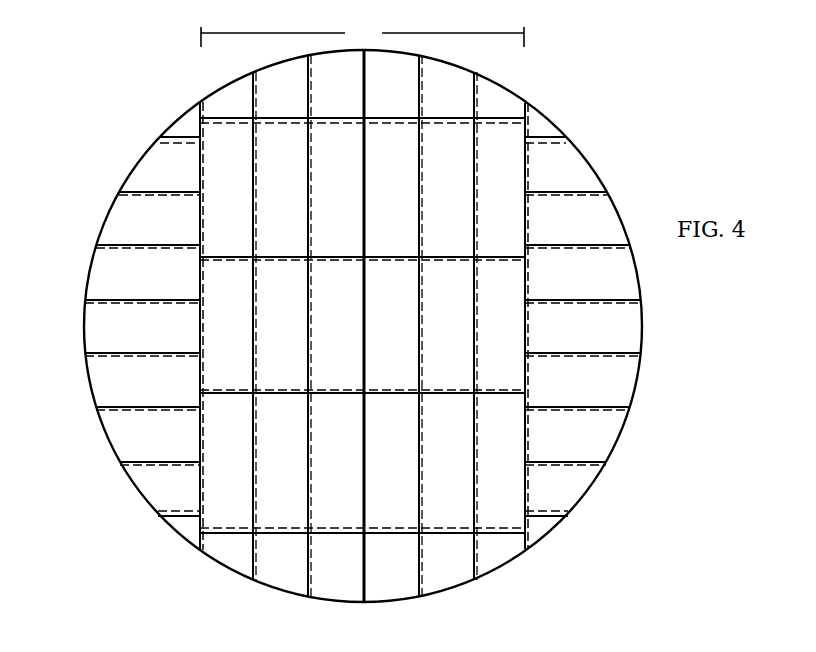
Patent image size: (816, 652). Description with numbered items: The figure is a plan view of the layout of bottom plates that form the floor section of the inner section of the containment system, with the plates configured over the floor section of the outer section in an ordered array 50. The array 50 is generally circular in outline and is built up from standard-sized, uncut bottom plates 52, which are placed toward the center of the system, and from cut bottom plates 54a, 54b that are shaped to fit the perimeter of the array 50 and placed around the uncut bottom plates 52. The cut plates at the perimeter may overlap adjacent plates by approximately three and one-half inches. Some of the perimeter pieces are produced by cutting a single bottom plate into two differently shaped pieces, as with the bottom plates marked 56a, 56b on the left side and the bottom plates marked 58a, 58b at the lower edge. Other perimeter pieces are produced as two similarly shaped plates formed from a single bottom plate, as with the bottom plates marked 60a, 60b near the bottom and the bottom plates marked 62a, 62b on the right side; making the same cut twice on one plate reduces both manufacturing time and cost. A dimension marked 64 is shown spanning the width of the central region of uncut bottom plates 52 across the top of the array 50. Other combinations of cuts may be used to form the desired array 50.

The ordered array 50 is at (523, 89).
The uncut bottom plate 52 is at (355, 212).
The cut bottom plate 54a is at (636, 329).
The cut bottom plate 54b is at (630, 378).
The cut bottom plate 56a is at (110, 422).
The cut bottom plate 56b is at (202, 553).
The cut bottom plate 58a is at (555, 522).
The cut bottom plate 58b is at (311, 597).
The cut bottom plate 60a is at (258, 579).
The cut bottom plate 60b is at (452, 581).
The cut bottom plate 62a is at (585, 478).
The cut bottom plate 62b is at (587, 172).
The width of die region 64 is at (362, 34).